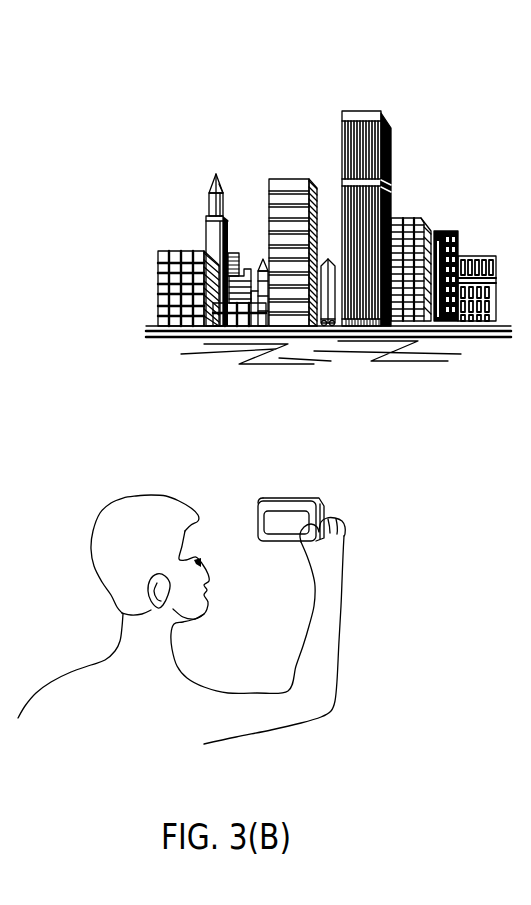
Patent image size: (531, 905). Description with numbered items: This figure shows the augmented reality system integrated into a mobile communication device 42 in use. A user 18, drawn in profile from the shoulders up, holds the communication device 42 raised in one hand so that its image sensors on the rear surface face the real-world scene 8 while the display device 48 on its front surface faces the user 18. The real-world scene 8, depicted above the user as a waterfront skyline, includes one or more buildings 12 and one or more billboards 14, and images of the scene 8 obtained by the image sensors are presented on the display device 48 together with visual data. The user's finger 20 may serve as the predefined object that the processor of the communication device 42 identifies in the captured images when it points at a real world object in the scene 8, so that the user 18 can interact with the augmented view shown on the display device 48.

The real-world scene 8 is at (347, 88).
The building 12 is at (388, 200).
The billboard 14 is at (287, 176).
The user 18 is at (90, 687).
The finger 20 is at (189, 585).
The mobile communication device 42 is at (305, 500).
The display device 48 is at (287, 522).